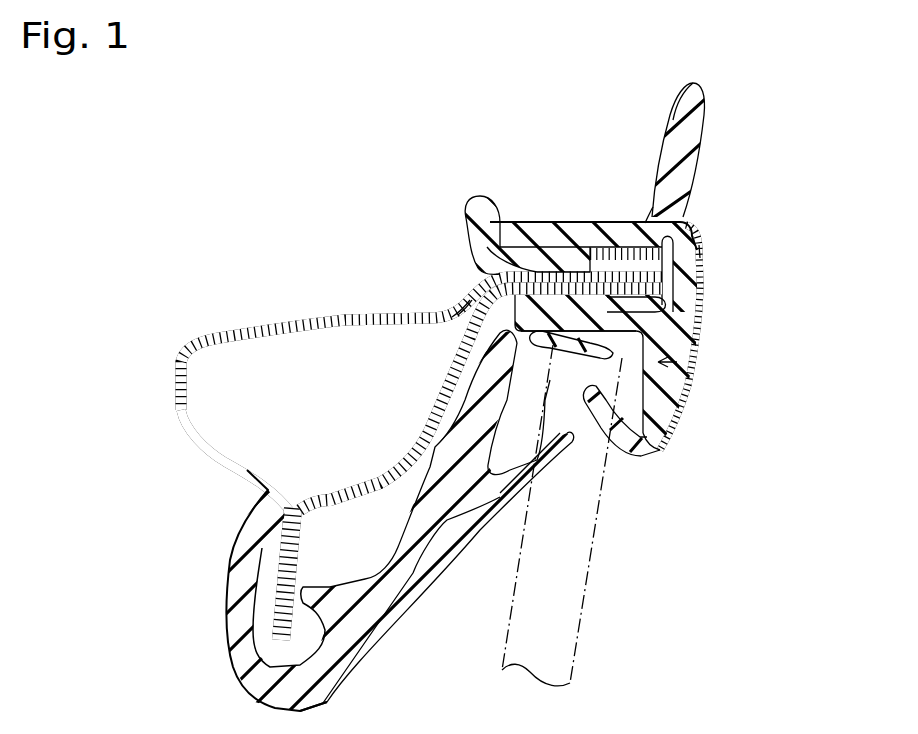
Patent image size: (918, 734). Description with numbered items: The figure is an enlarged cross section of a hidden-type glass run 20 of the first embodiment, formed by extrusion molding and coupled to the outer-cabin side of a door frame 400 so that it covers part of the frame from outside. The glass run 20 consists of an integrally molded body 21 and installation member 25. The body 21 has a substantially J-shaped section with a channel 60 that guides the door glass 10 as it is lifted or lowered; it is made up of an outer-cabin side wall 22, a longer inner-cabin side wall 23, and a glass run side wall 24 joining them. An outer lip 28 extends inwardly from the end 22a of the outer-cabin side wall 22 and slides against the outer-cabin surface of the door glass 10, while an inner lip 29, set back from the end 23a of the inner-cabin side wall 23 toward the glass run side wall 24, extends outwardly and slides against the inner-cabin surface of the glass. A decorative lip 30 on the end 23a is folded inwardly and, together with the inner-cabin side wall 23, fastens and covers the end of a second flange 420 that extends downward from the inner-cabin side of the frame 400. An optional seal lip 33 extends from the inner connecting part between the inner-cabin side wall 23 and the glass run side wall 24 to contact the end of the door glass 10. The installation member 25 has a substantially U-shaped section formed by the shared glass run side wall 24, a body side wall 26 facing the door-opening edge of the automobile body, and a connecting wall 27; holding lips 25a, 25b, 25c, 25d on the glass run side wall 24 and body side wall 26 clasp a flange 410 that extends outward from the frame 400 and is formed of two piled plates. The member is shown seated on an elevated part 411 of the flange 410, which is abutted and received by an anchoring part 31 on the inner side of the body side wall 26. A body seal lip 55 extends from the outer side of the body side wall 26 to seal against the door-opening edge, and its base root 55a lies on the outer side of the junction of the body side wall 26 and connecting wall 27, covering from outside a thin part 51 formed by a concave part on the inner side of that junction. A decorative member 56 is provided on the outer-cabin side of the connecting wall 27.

The door glass 10 is at (600, 521).
The glass run 20 is at (609, 394).
The body 21 is at (739, 330).
The outer-cabin side wall 22 is at (637, 359).
The end of the outer-cabin side wall 22a is at (655, 452).
The inner-cabin side wall 23 is at (437, 524).
The end of the inner-cabin side wall 23a is at (300, 687).
The glass run side wall 24 is at (615, 334).
The installation member 25 is at (609, 309).
The holding lip 25a is at (664, 305).
The holding lip 25b is at (478, 318).
The holding lip 25c is at (460, 355).
The holding lip 25d is at (485, 275).
The body side wall 26 is at (572, 230).
The connecting wall 27 is at (667, 260).
The outer lip 28 is at (588, 458).
The inner lip 29 is at (540, 487).
The decorative lip 30 is at (253, 543).
The anchoring part 31 is at (478, 200).
The seal lip 33 is at (612, 352).
The thin part 51 is at (665, 148).
The body seal lip 55 is at (672, 108).
The base root of the body seal lip 55a is at (653, 210).
The decorative member 56 is at (690, 364).
The channel 60 is at (630, 453).
The frame 400 is at (401, 413).
The flange 410 is at (465, 262).
The elevated part 411 is at (702, 248).
The second flange 420 is at (270, 624).